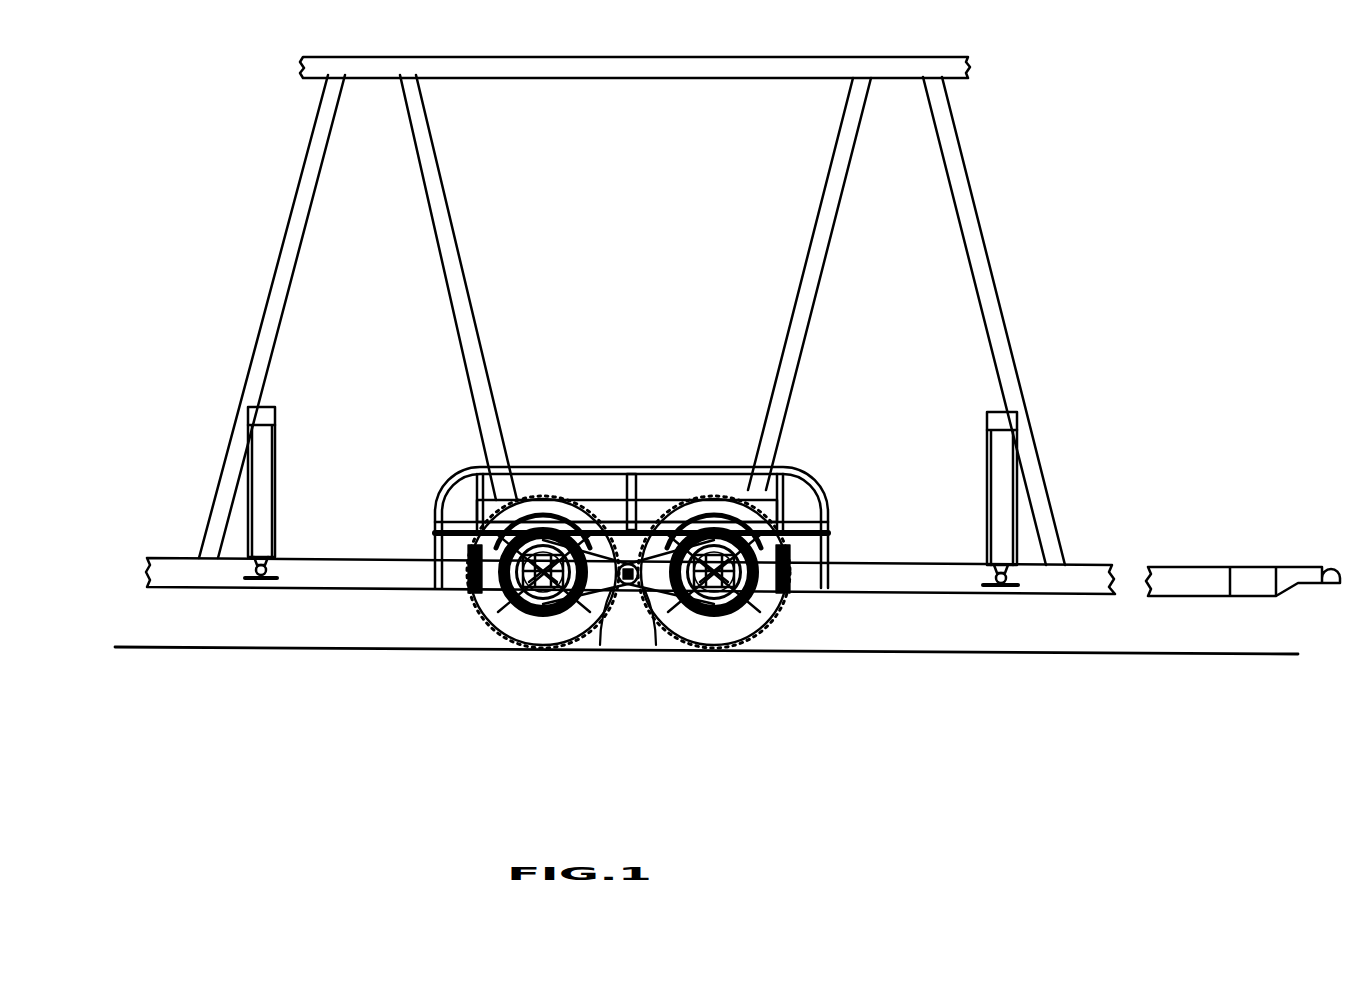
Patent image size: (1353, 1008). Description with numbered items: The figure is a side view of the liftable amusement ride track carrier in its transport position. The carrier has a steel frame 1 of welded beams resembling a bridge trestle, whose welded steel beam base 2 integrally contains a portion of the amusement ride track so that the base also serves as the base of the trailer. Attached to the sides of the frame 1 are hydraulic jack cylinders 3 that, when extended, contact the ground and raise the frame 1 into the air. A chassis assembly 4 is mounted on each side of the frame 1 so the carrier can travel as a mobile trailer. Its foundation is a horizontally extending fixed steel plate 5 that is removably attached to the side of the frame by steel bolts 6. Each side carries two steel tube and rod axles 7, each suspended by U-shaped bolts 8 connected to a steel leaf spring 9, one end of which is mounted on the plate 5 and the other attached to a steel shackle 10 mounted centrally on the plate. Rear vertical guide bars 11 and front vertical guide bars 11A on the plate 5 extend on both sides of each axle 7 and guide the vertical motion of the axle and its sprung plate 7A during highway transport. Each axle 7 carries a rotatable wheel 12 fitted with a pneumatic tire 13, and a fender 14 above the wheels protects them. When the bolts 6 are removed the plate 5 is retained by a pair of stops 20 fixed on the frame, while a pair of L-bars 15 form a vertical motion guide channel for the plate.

The frame 1 is at (888, 563).
The base of frame 2 is at (198, 572).
The lifting means 3 is at (262, 438).
The chassis assembly 4 is at (495, 500).
The fixed plate 5 is at (643, 520).
The fixed plate fastener means 6 is at (480, 598).
The axle 7 is at (525, 598).
The sprung plate 7A is at (493, 603).
The axle fastener means 8 is at (557, 620).
The energy storing device 9 is at (493, 477).
The restraint means 10 is at (628, 592).
The vertical guide, rear 11 is at (535, 520).
The vertical guide, front 11A is at (556, 525).
The wheel 12 is at (530, 627).
The tire 13 is at (610, 637).
The fender 14 is at (603, 466).
The restraining means comprising fixed plate channel 15 is at (440, 503).
The stops restraining fixed plate 20 is at (477, 598).